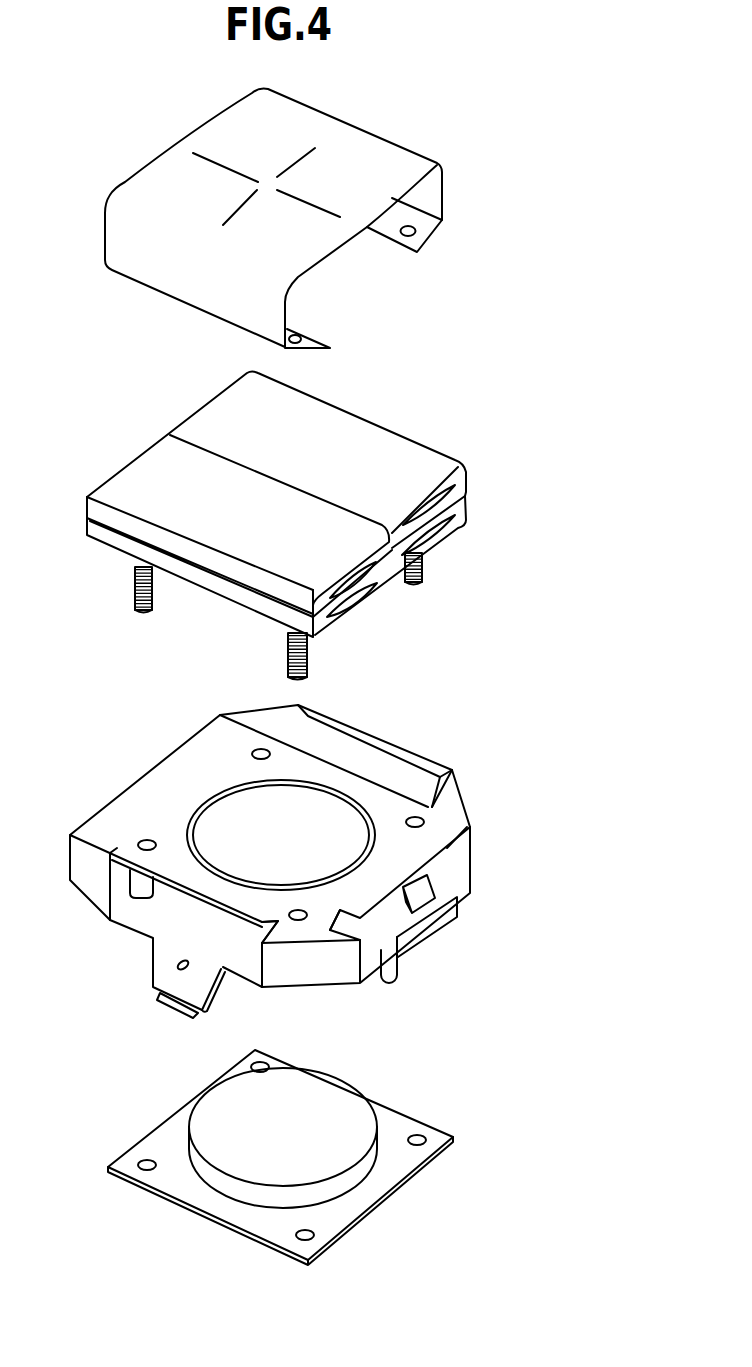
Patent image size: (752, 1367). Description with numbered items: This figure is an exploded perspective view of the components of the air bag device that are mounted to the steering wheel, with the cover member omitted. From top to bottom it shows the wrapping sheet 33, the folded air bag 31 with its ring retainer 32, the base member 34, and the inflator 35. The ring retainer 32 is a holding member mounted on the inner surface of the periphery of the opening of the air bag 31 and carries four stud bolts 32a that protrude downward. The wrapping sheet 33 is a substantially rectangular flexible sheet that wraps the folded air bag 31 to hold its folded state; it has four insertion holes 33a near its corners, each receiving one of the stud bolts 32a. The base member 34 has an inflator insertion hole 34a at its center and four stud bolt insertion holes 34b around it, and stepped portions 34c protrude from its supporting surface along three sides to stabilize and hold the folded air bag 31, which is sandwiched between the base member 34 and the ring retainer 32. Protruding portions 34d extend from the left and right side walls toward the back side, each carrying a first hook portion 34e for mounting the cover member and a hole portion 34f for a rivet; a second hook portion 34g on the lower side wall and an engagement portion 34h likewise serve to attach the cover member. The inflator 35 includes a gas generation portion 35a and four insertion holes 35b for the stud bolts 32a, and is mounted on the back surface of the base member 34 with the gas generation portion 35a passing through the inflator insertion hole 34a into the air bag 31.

The air bag 31 is at (381, 424).
The ring retainer 32 is at (424, 565).
The stud bolts 32a is at (152, 594).
The wrapping sheet 33 is at (346, 123).
The insertion holes 33a is at (412, 228).
The base member 34 is at (390, 740).
The inflator insertion hole 34a is at (283, 787).
The stud bolt insertion holes 34b is at (255, 752).
The stepped portions 34c is at (457, 823).
The protruding portions 34d is at (224, 985).
The first hook portion 34e is at (167, 1005).
The hole portion 34f is at (177, 967).
The second hook portion 34g is at (430, 933).
The engagement portion 34h is at (417, 893).
The inflator 35 is at (369, 1210).
The gas generation portion 35a is at (212, 1137).
The insertion holes 35b is at (418, 1137).